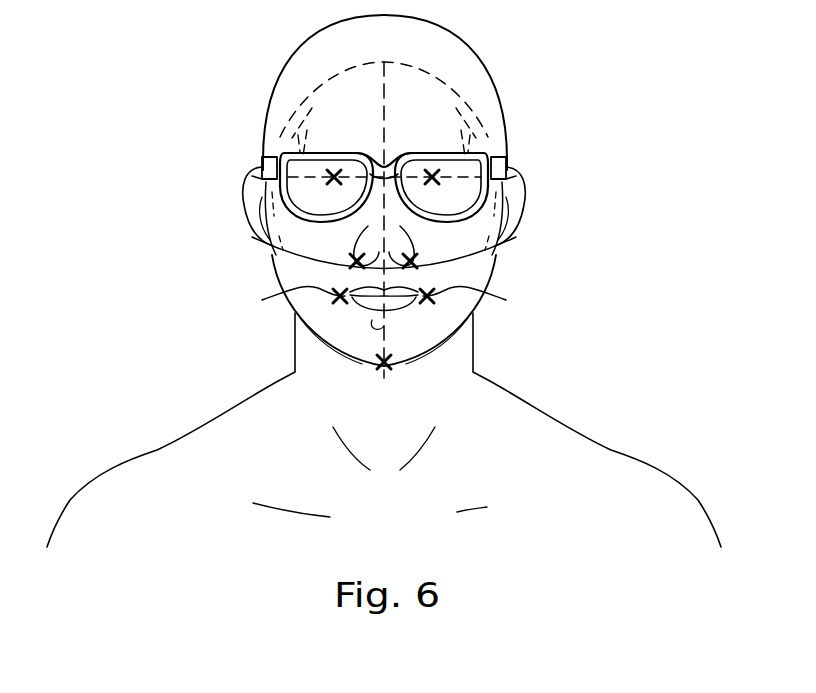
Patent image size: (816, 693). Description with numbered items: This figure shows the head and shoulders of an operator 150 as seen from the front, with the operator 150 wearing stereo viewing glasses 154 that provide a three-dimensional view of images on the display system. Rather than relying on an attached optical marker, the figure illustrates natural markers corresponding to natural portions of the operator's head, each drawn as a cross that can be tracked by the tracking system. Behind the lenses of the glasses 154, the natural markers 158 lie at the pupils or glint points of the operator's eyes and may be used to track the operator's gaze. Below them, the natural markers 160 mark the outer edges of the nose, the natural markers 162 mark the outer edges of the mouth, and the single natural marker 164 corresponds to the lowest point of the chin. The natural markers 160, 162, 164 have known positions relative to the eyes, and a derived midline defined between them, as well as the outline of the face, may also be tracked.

The operator 150 is at (507, 114).
The stereo viewing glasses 154 is at (291, 153).
The natural markers 158 is at (333, 172).
The natural markers 160 is at (252, 237).
The natural markers 162 is at (262, 300).
The natural marker 164 is at (384, 372).